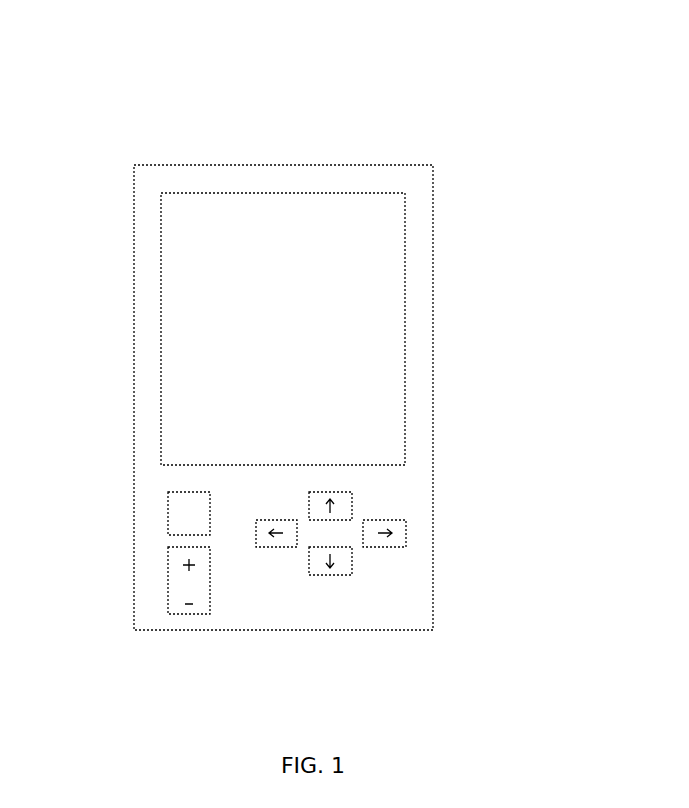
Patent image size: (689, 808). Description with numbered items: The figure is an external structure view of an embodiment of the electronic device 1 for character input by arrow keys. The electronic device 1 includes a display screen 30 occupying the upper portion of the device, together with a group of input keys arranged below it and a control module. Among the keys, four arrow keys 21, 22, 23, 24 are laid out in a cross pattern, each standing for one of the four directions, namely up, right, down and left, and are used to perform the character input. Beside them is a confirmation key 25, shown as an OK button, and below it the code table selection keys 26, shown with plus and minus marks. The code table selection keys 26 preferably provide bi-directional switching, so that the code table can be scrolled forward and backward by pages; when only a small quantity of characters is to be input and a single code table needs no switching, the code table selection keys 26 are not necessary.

The electronic device 1 is at (295, 165).
The display screen 30 is at (378, 275).
The arrow key 21 is at (350, 493).
The arrow key 22 is at (405, 532).
The arrow key 23 is at (331, 574).
The arrow key 24 is at (276, 548).
The confirmation key 25 is at (168, 515).
The code table selection keys 26 is at (168, 582).